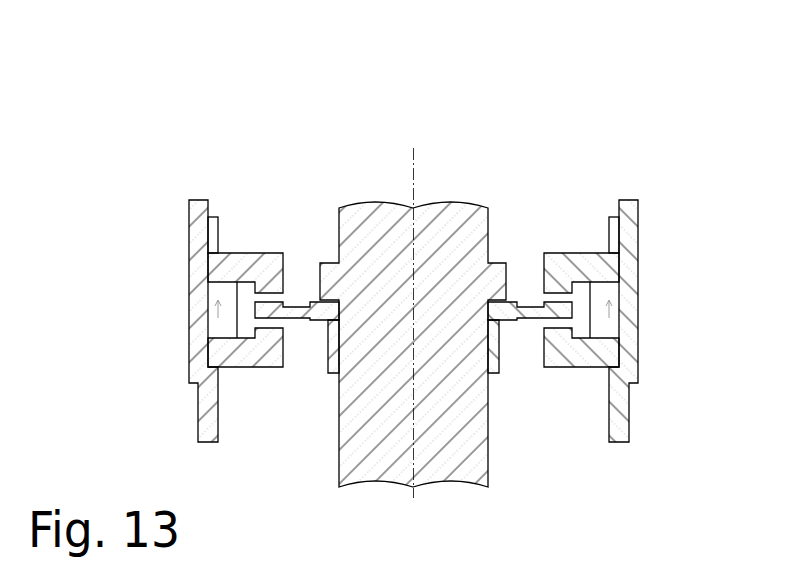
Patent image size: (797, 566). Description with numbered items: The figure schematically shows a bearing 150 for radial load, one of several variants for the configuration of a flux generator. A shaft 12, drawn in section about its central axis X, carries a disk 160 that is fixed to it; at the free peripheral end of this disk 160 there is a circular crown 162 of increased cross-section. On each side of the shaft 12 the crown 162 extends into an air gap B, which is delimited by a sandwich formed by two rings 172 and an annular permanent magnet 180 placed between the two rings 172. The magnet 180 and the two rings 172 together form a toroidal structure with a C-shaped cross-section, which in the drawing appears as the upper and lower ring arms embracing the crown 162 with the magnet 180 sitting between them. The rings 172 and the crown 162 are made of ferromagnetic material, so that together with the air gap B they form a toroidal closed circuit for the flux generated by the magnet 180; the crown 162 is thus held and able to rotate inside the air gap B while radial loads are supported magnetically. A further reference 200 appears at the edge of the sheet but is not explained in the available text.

The shaft 12 is at (468, 207).
The bearing 150 is at (443, 230).
The disk 160 is at (301, 305).
The circular crown 162 is at (284, 320).
The rings 172 is at (249, 252).
The annular permanent magnet 180 is at (211, 325).
The housing 200 is at (752, 553).
The air gap B is at (243, 296).
The axis X is at (416, 166).